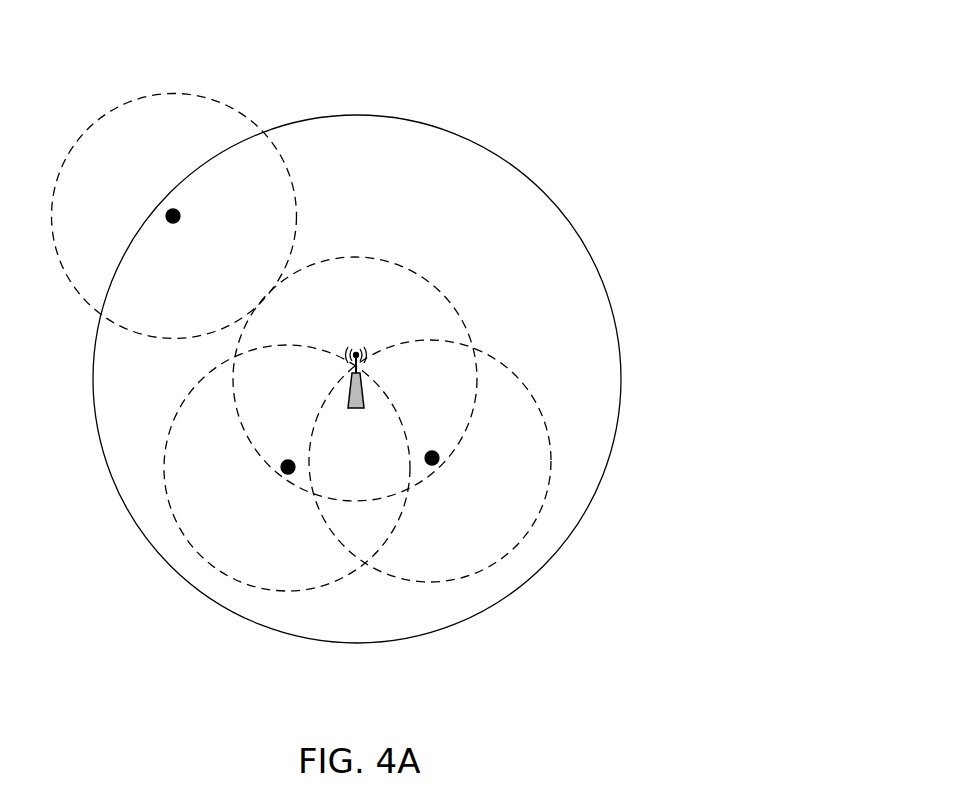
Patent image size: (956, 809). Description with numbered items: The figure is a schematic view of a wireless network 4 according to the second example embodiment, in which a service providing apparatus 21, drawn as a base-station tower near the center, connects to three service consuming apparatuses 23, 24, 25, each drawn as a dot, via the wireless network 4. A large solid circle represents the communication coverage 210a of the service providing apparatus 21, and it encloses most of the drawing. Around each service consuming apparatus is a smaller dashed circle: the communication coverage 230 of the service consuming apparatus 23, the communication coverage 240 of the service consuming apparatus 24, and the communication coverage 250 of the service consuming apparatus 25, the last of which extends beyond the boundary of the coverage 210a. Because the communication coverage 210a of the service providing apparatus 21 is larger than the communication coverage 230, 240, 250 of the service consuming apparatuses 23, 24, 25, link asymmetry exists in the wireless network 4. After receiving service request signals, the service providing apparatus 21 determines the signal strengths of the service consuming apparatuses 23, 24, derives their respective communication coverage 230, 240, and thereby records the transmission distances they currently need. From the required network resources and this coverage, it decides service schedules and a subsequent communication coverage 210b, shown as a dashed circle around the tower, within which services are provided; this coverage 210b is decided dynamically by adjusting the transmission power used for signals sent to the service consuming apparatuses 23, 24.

The wireless network 4 is at (439, 80).
The communication coverage of the service providing apparatus 210a is at (537, 185).
The subsequent communication coverage 210b is at (437, 288).
The communication coverage of service consuming apparatus 250 is at (193, 94).
The communication coverage of service consuming apparatus 230 is at (165, 465).
The communication coverage of service consuming apparatus 240 is at (533, 395).
The service consuming apparatus 25 is at (178, 216).
The service consuming apparatus 23 is at (290, 462).
The service consuming apparatus 24 is at (428, 453).
The service providing apparatus 21 is at (365, 395).